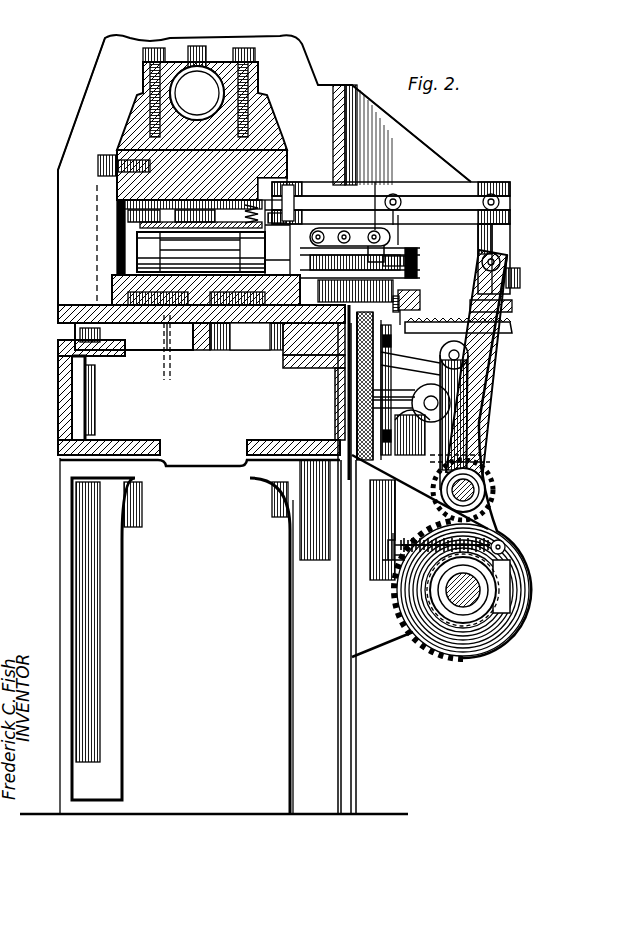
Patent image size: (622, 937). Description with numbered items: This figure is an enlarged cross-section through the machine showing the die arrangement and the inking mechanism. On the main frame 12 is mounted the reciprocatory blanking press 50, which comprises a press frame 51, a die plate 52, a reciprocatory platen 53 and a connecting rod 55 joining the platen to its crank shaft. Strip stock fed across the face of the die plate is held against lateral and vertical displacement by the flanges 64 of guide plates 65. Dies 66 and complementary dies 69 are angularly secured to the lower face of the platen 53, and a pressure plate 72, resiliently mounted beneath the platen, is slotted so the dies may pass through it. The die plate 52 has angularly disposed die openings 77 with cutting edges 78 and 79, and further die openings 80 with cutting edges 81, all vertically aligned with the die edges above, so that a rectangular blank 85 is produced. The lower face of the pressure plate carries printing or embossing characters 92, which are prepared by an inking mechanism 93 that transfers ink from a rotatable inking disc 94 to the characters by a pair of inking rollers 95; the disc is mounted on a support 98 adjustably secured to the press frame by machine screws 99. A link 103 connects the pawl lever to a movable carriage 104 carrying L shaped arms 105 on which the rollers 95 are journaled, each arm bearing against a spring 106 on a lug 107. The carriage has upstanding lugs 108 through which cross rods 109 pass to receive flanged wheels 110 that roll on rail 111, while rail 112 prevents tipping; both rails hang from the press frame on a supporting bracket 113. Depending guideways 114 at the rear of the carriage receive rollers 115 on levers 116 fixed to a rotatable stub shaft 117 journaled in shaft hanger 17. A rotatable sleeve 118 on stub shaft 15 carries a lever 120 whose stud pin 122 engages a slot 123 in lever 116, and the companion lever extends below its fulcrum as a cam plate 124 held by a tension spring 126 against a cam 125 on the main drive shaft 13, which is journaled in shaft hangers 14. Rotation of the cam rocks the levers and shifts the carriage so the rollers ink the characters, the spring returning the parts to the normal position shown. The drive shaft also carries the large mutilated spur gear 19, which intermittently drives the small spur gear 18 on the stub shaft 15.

The main frame 12 is at (220, 415).
The main drive shaft 13 is at (477, 590).
The shaft hangers 14 is at (513, 587).
The stub shaft 15 is at (478, 490).
The shaft hanger 17 is at (423, 440).
The small spur gear 18 is at (481, 482).
The large mutilated spur gear 19 is at (517, 600).
The reciprocatory blanking press 50 is at (78, 114).
The press frame 51 is at (78, 136).
The die plate 52 is at (117, 290).
The reciprocatory platen 53 is at (135, 183).
The connecting rod 55 is at (190, 52).
The flanges 64 is at (150, 275).
The guide plates 65 is at (130, 273).
The dies 66 is at (192, 215).
The complementary dies 69 is at (145, 212).
The pressure plate 72 is at (143, 226).
The die openings 77 is at (168, 365).
The cutting edge 78 is at (170, 350).
The cutting edge 79 is at (179, 355).
The die openings 80 is at (162, 365).
The cutting edges 81 is at (160, 345).
The rectangular blank 85 is at (230, 350).
The printing or embossing characters 92 is at (243, 215).
The inking mechanism 93 is at (512, 238).
The inking disc 94 is at (416, 255).
The inking rollers 95 is at (328, 230).
The support 98 is at (366, 322).
The machine screws 99 is at (372, 333).
The link 103 is at (420, 302).
The carriage 104 is at (520, 284).
The L shaped arms 105 is at (366, 230).
The spring 106 is at (408, 235).
The lug 107 is at (422, 285).
The upstanding lugs or arms 108 is at (393, 215).
The cross rods 109 is at (393, 202).
The flanged wheels 110 is at (400, 215).
The rail 111 is at (510, 215).
The rail 112 is at (510, 188).
The supporting bracket 113 is at (425, 146).
The guideways 114 is at (505, 250).
The rollers 115 is at (500, 263).
The levers 116 is at (490, 310).
The rotatable stub shaft 117 is at (465, 405).
The rotatable sleeve 118 is at (478, 480).
The lever 120 is at (455, 392).
The stud pin 122 is at (468, 355).
The slot 123 is at (440, 380).
The cam plate 124 is at (497, 573).
The cam 125 is at (497, 557).
The tension spring 126 is at (490, 540).